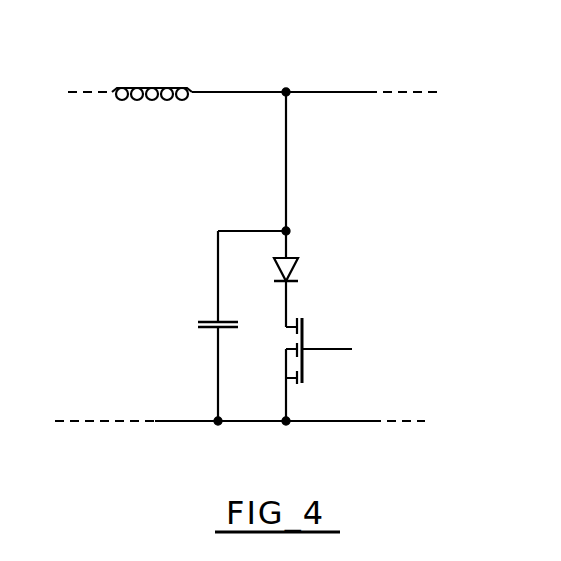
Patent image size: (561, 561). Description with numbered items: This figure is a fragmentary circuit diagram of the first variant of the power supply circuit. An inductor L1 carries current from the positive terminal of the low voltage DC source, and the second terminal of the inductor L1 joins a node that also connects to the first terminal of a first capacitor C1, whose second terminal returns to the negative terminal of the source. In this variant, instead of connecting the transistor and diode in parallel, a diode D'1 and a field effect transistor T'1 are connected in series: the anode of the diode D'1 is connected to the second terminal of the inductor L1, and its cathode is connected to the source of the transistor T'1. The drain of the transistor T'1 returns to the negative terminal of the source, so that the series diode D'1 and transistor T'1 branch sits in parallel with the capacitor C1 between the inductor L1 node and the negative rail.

The inductor L1 is at (152, 74).
The first capacitor C1 is at (200, 326).
The diode D'1 is at (307, 285).
The field effect transistor T'1 is at (309, 363).